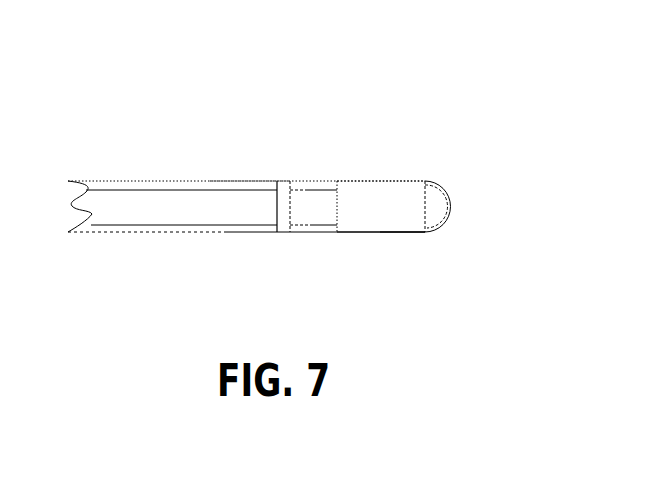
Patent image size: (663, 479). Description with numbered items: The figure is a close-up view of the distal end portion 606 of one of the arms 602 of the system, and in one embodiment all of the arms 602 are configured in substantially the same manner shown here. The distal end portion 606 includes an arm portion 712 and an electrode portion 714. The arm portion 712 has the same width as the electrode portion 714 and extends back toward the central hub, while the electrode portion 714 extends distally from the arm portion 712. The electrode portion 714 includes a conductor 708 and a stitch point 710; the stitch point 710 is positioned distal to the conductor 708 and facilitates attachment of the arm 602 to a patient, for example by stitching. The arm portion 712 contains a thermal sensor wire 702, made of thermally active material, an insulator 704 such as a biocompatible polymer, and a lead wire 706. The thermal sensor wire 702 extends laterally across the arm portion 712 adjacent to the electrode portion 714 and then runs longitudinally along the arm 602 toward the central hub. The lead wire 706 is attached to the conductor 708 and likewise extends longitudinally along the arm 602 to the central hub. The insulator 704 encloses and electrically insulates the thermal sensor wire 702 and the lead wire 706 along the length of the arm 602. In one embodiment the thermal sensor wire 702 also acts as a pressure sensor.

The arm 602 is at (136, 108).
The thermal sensor wire 702 is at (105, 180).
The insulator 704 is at (103, 233).
The lead wire 706 is at (231, 207).
The arm portion 712 is at (210, 178).
The distal end portion 606 is at (386, 178).
The conductor 708 is at (400, 195).
The stitch point 710 is at (437, 203).
The electrode portion 714 is at (403, 240).